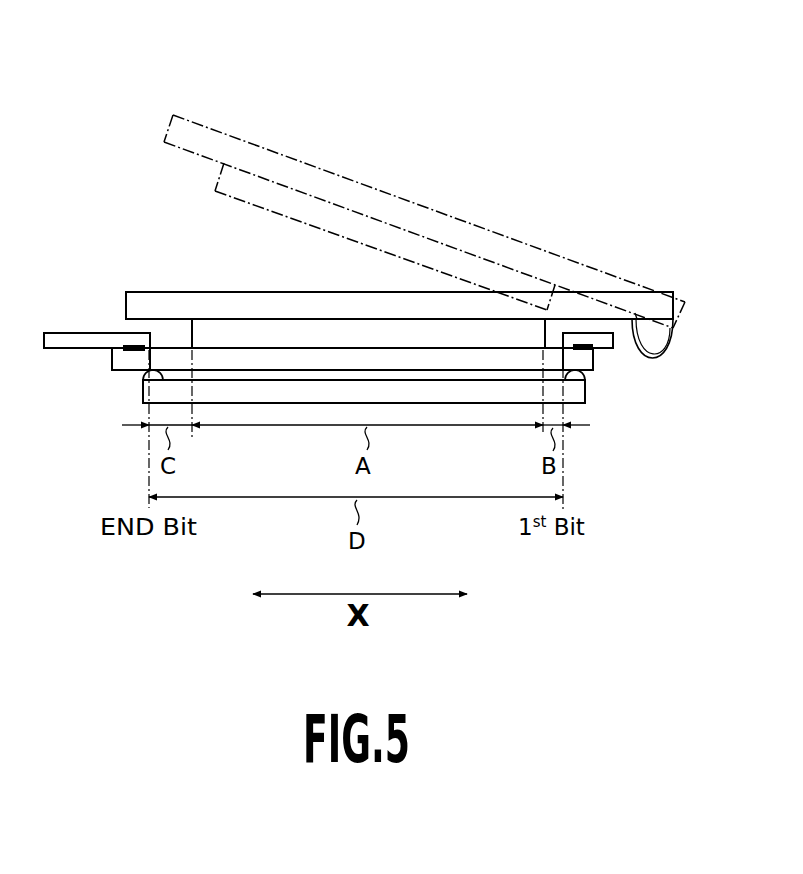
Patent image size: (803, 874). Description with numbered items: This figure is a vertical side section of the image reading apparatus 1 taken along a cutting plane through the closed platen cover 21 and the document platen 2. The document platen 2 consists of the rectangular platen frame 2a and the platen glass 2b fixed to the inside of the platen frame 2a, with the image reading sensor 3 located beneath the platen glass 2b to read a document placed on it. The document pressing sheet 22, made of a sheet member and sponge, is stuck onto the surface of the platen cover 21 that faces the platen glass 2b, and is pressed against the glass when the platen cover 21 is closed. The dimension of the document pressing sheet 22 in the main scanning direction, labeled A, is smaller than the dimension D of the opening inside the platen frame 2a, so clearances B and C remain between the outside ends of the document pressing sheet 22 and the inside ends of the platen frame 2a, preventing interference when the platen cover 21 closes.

The image reading apparatus 1 is at (452, 158).
The document platen 2 is at (127, 206).
The platen frame 2a is at (118, 340).
The platen glass 2b is at (275, 360).
The image reading sensor 3 is at (158, 388).
The platen cover 21 is at (522, 307).
The document pressing sheet 22 is at (449, 337).